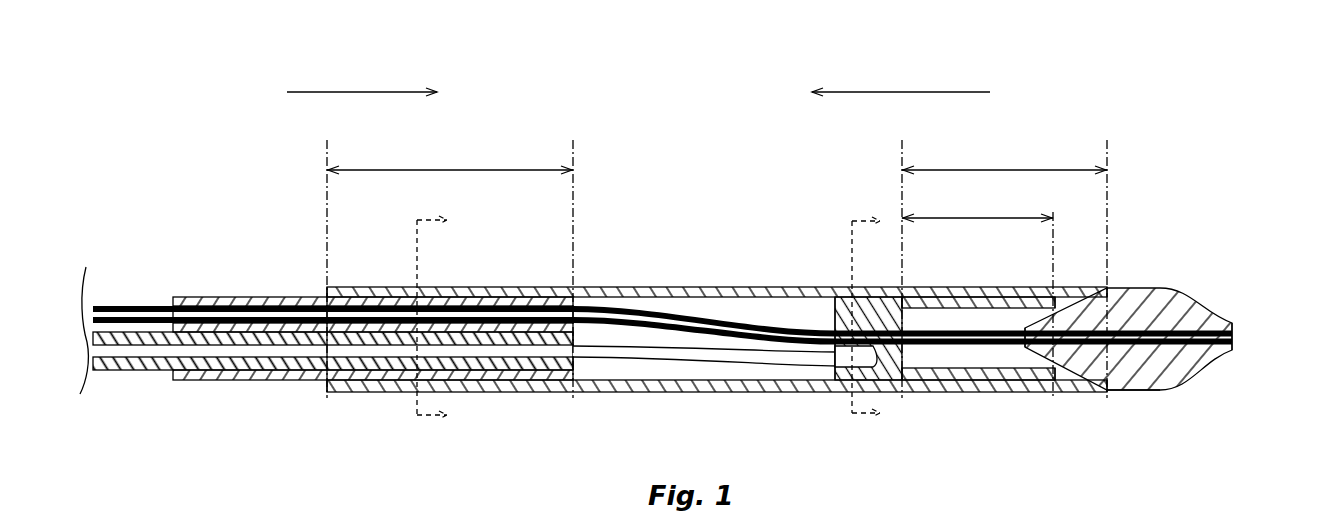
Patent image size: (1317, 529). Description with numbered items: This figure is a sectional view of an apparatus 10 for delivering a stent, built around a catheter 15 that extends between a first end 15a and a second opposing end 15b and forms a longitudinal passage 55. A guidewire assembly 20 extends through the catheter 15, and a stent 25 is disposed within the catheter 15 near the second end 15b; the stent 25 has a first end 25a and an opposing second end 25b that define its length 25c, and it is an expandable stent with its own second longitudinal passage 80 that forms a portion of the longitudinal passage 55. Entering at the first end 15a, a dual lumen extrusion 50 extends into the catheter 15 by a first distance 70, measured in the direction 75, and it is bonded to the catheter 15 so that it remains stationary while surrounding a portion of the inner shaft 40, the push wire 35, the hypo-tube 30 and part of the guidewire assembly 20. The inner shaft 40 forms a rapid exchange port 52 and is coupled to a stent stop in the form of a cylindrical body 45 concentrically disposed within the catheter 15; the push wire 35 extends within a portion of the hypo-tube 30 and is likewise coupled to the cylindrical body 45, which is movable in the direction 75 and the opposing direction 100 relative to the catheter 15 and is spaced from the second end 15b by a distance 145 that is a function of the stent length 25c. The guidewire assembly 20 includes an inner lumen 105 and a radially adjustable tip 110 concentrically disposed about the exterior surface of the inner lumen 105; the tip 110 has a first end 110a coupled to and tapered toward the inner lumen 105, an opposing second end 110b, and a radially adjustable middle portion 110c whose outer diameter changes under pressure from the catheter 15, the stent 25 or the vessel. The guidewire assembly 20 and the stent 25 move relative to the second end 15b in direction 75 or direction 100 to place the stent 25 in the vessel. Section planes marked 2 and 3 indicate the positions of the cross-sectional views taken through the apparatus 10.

The apparatus 10 is at (1153, 100).
The catheter 15 is at (803, 287).
The first end 15a is at (324, 288).
The second opposing end 15b is at (1120, 287).
The guidewire assembly 20 is at (1242, 277).
The stent 25 is at (1065, 380).
The first end 25a is at (892, 297).
The second end 25b is at (1066, 297).
The length 25c is at (990, 216).
The hypo-tube 30 is at (143, 371).
The push wire 35 is at (630, 365).
The inner shaft 40 is at (165, 300).
The cylindrical body 45 is at (893, 385).
The lumen extrusion 50 is at (539, 378).
The rapid exchange port 52 is at (106, 305).
The longitudinal passage 55 is at (813, 322).
The first distance 70 is at (468, 168).
The direction 75 is at (365, 91).
The second longitudinal passage 80 is at (948, 362).
The opposing direction 100 is at (898, 91).
The inner lumen 105 is at (1015, 346).
The radially adjustable tip 110 is at (1208, 356).
The first end 110a is at (1235, 323).
The opposing second end 110b is at (1024, 329).
The radially adjustable middle portion 110c is at (1172, 391).
The distance 145 is at (1015, 168).
The section line 2 is at (432, 321).
The section line 3 is at (866, 320).